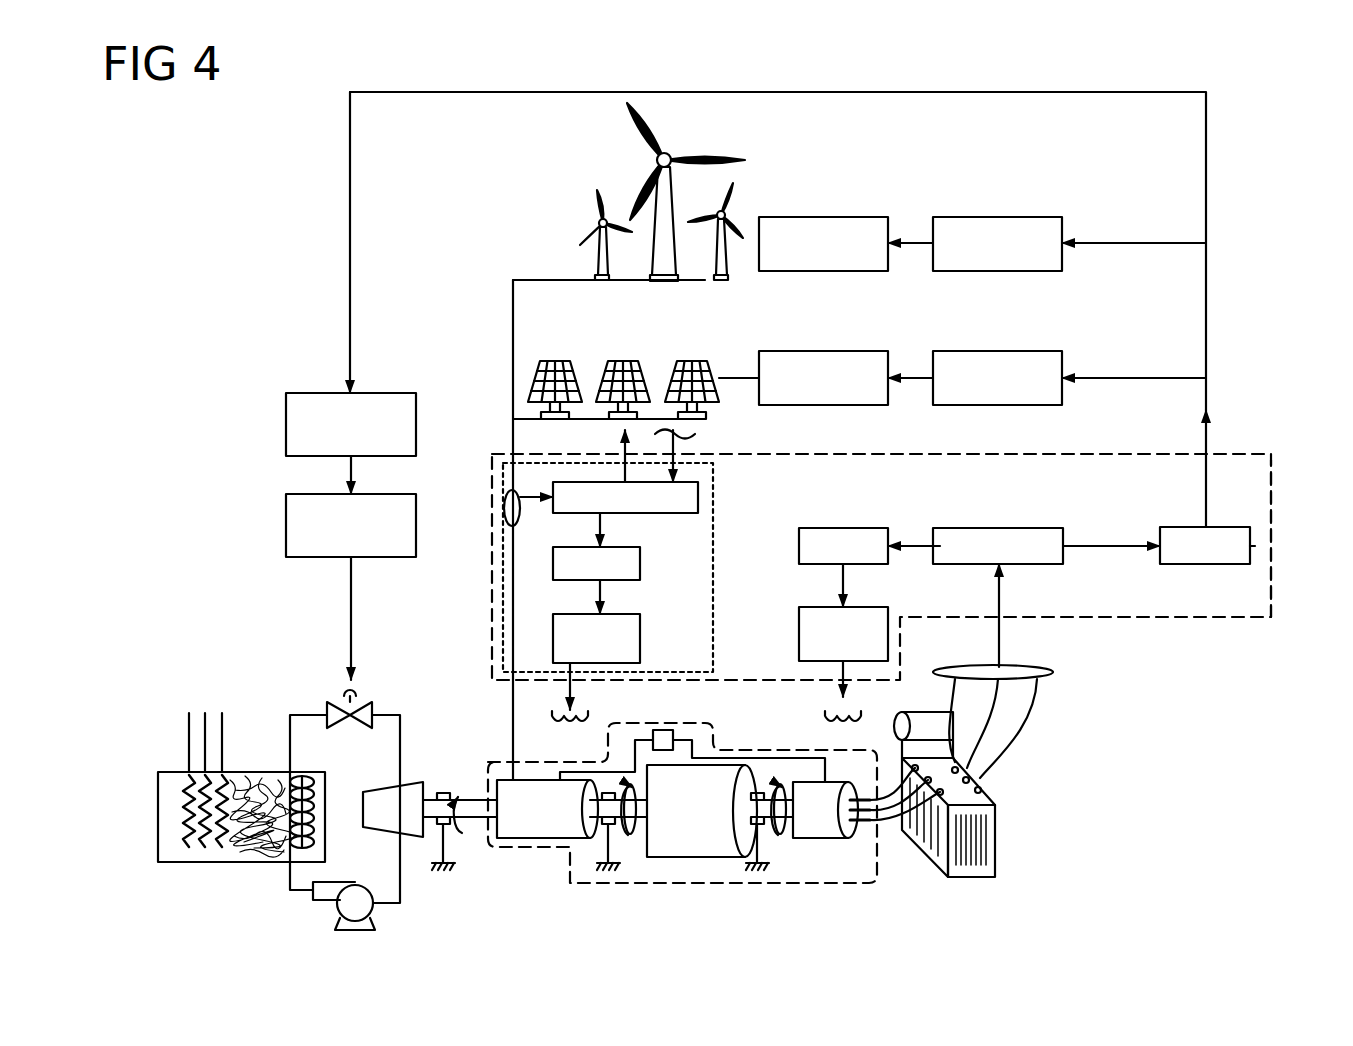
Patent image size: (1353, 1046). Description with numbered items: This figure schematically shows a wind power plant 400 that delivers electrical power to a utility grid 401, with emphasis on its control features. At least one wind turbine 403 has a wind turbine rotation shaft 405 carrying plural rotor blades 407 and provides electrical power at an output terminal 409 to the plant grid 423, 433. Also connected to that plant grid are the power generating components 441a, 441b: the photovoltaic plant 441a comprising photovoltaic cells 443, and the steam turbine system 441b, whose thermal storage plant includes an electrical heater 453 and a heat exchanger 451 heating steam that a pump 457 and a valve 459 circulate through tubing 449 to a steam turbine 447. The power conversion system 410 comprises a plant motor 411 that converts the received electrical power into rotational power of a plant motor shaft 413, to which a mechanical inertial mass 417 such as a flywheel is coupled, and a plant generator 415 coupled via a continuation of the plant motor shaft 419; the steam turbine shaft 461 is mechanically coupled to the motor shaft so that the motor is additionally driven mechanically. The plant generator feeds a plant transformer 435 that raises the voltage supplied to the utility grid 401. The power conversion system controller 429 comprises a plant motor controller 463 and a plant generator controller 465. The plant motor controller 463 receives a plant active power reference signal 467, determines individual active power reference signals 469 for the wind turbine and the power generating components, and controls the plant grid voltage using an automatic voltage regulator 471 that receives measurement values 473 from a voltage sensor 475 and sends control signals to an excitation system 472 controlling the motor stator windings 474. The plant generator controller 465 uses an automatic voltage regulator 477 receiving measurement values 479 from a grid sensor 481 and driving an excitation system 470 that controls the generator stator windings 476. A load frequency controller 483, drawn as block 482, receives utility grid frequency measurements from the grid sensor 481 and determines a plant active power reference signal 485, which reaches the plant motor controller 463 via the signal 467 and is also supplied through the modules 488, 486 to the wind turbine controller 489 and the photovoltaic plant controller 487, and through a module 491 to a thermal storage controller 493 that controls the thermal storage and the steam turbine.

The wind power plant 400 is at (1233, 148).
The utility grid 401 is at (1055, 672).
The wind turbine 403 is at (606, 190).
The wind turbine rotation shaft 405 is at (632, 192).
The rotor blades 407 is at (660, 122).
The output terminal 409 is at (647, 279).
The power conversion system 410 is at (883, 897).
The plant motor 411 is at (540, 840).
The plant motor shaft 413 is at (636, 832).
The plant generator 415 is at (828, 845).
The mechanical inertial mass 417 is at (718, 858).
The continuation of the plant motor shaft 419 is at (785, 838).
The plant grid 423 is at (513, 322).
The power conversion system controller 429 is at (1227, 618).
The plant grid 433 is at (513, 280).
The plant transformer 435 is at (1055, 803).
The photovoltaic plant 441a is at (666, 352).
The steam turbine system 441b is at (287, 751).
The photovoltaic cells 443 is at (553, 358).
The steam turbine 447 is at (368, 790).
The tubing 449 is at (401, 722).
The heat exchanger 451 is at (302, 775).
The electrical heater 453 is at (180, 785).
The pump 457 is at (375, 908).
The valve 459 is at (327, 712).
The steam turbine shaft 461 is at (442, 793).
The plant motor controller 463 is at (717, 594).
The plant generator controller 465 is at (978, 494).
The plant active power reference signal 467 is at (680, 478).
The individual active power reference signals 469 is at (620, 432).
The excitation system 470 is at (799, 630).
The automatic voltage regulator 471 is at (640, 555).
The excitation system 472 is at (640, 655).
The measurement values 473 is at (603, 545).
The motor stator windings 474 is at (592, 718).
The voltage sensor 475 is at (698, 495).
The generator stator windings 476 is at (823, 720).
The automatic voltage regulator 477 is at (846, 526).
The measurement values 479 is at (889, 545).
The grid sensor 481 is at (1020, 527).
The output block 482 is at (1160, 543).
The load frequency controller 483 is at (1252, 546).
The plant active power reference signal 485 is at (1208, 410).
The module 486 is at (999, 351).
The photovoltaic plant controller 487 is at (848, 351).
The module 488 is at (999, 217).
The wind turbine controller 489 is at (822, 217).
The module 491 is at (286, 420).
The thermal storage controller 493 is at (286, 520).